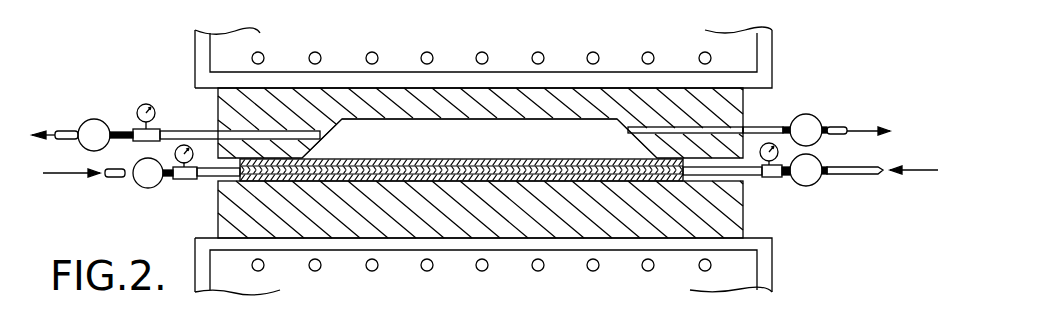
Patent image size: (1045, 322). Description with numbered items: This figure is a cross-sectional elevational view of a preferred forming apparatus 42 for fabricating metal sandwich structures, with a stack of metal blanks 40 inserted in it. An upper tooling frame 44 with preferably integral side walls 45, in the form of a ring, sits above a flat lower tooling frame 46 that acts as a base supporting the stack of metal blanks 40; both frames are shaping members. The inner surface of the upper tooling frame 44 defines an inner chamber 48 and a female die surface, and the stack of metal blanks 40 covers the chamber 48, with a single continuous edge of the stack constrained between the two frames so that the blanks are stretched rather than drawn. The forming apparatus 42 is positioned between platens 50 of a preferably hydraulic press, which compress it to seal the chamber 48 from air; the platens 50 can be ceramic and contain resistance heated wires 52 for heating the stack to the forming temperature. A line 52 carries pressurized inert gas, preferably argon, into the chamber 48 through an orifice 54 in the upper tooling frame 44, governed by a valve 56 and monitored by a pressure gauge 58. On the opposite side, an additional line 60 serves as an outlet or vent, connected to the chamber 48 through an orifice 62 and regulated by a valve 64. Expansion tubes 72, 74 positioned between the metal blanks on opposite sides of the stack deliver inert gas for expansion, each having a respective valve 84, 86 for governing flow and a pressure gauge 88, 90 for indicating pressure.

The stack of metal blanks 40 is at (476, 182).
The forming apparatus 42 is at (920, 57).
The upper tooling frame 44 is at (592, 98).
The side walls 45 is at (315, 143).
The lower tooling frame 46 is at (743, 217).
The inner chamber 48 is at (479, 138).
The platens 50 is at (773, 35).
The resistance heated wires 52 is at (164, 132).
The orifice 54 is at (218, 130).
The valve 56 is at (97, 118).
The pressure gauge 58 is at (140, 107).
The additional line 60 is at (755, 128).
The orifice 62 is at (662, 128).
The valve 64 is at (806, 114).
The expansion tube 72 is at (216, 176).
The expansion tube 74 is at (708, 172).
The valve 84 is at (137, 188).
The valve 86 is at (817, 184).
The pressure gauge 88 is at (184, 182).
The pressure gauge 90 is at (769, 178).